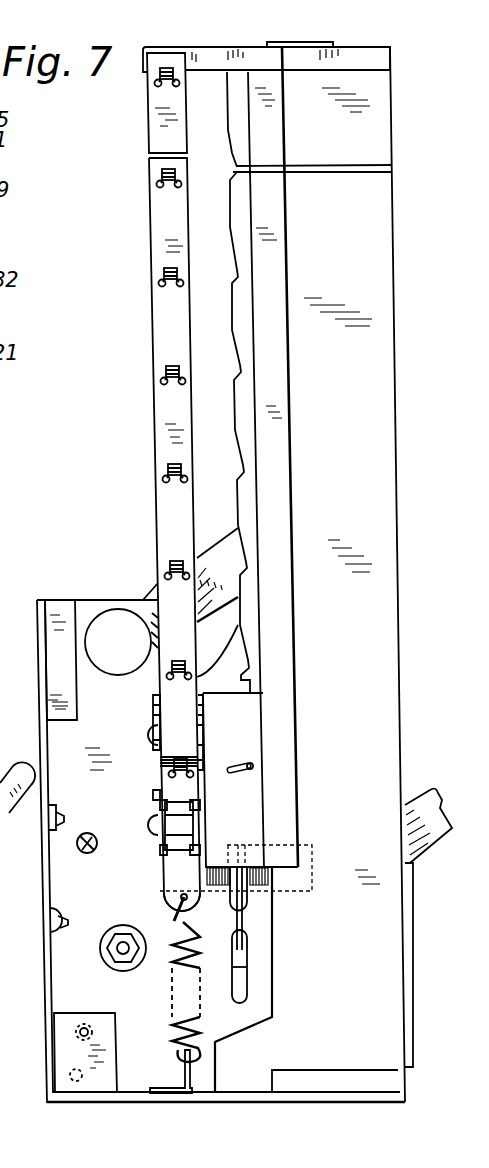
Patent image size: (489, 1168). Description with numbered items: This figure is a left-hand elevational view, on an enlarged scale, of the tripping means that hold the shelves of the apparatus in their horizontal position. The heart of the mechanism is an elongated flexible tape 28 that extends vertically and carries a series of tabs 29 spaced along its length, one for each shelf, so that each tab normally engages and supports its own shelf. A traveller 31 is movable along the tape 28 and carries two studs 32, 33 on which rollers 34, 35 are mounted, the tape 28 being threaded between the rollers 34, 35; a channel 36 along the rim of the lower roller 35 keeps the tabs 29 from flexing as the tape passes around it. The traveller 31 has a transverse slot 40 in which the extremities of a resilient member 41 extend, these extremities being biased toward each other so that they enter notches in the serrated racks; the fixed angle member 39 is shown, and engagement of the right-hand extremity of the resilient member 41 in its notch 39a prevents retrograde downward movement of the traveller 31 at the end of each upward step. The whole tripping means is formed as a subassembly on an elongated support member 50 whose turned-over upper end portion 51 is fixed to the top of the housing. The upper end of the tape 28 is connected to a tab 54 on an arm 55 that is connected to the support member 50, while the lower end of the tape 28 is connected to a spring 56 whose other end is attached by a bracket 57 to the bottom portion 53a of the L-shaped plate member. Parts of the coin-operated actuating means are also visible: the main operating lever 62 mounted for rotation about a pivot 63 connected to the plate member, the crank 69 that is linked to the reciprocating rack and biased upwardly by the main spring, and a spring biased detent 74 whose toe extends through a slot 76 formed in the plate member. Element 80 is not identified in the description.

The flexible tape 28 is at (148, 167).
The tabs 29 is at (172, 368).
The traveller 31 is at (240, 712).
The stud 32 is at (147, 738).
The stud 33 is at (150, 820).
The roller 34 is at (155, 705).
The roller 35 is at (157, 795).
The channel 36 is at (180, 837).
The angle member 39 is at (245, 415).
The notch 39a is at (233, 279).
The transverse slot 40 is at (235, 773).
The resilient member 41 is at (249, 763).
The support member 50 is at (377, 185).
The upper end portion 51 is at (315, 42).
The bottom portion 53a is at (100, 1103).
The tab 54 is at (168, 67).
The arm 55 is at (210, 55).
The spring 56 is at (178, 962).
The bracket 57 is at (182, 1078).
The main operating lever 62 is at (420, 803).
The pivot 63 is at (120, 950).
The crank 69 is at (213, 557).
The spring biased detent 74 is at (242, 923).
The slot 76 is at (238, 983).
The latch 80 is at (53, 917).